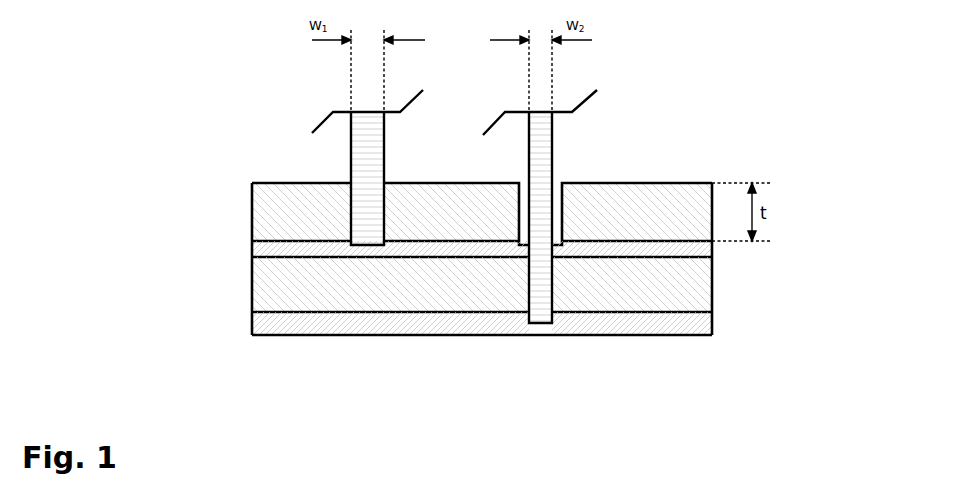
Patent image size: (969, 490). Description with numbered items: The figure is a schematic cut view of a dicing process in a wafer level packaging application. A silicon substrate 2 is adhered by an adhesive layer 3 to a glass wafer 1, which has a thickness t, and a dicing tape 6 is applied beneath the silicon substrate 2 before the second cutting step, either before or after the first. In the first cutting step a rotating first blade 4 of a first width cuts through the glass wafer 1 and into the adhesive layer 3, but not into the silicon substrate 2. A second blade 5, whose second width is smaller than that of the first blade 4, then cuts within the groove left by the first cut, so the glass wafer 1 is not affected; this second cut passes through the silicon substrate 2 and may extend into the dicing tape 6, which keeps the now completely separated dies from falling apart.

The glass wafer 1 is at (285, 217).
The silicon substrate 2 is at (278, 291).
The adhesive layer 3 is at (275, 250).
The first blade 4 is at (368, 167).
The second blade 5 is at (567, 138).
The dicing tape 6 is at (690, 330).